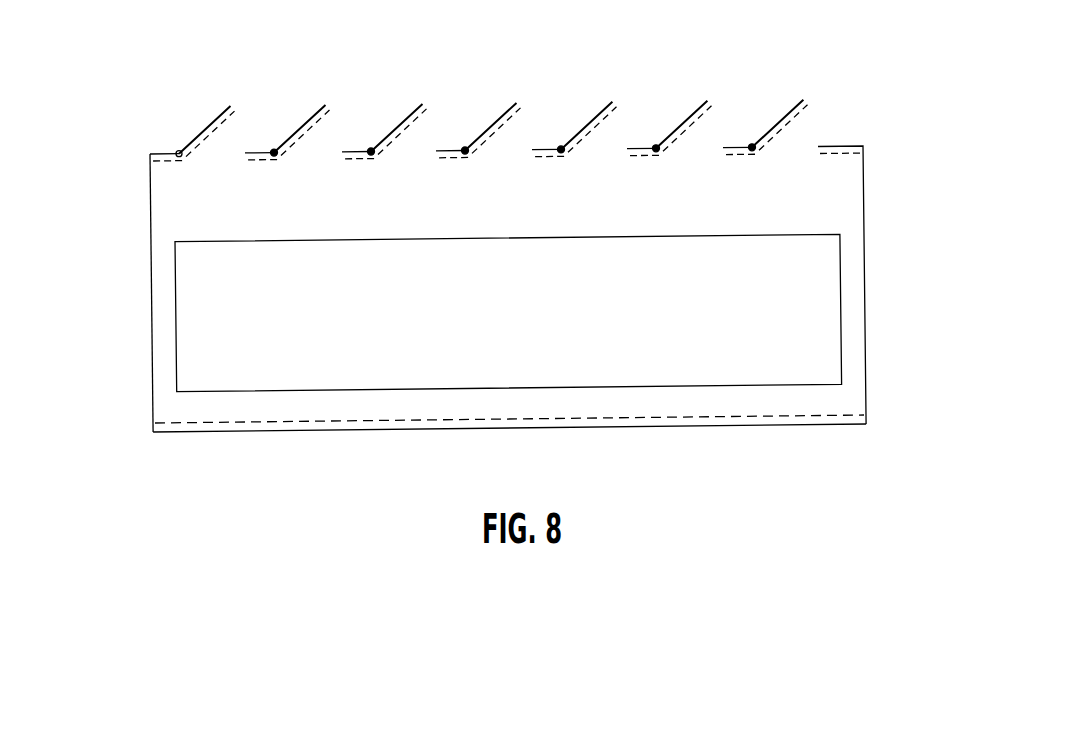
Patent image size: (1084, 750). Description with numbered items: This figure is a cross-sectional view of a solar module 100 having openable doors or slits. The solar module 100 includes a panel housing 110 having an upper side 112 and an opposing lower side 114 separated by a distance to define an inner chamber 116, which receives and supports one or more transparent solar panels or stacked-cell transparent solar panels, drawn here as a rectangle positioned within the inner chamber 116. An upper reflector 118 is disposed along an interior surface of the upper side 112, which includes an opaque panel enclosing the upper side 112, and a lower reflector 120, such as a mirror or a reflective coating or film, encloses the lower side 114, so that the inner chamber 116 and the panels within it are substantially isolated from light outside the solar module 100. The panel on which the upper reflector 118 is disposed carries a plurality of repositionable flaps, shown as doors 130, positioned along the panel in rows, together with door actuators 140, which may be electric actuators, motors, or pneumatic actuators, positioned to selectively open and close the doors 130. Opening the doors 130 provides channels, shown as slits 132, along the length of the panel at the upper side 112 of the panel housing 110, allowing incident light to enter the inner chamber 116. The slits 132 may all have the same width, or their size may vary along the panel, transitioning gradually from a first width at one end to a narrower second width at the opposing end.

The solar module 100 is at (132, 43).
The panel housing 110 is at (150, 318).
The upper side 112 is at (165, 153).
The lower side 114 is at (222, 435).
The inner chamber 116 is at (848, 182).
The upper reflector 118 is at (392, 145).
The lower reflector 120 is at (700, 418).
The doors 130 is at (228, 110).
The slits 132 is at (216, 170).
The door actuator 140 is at (273, 151).